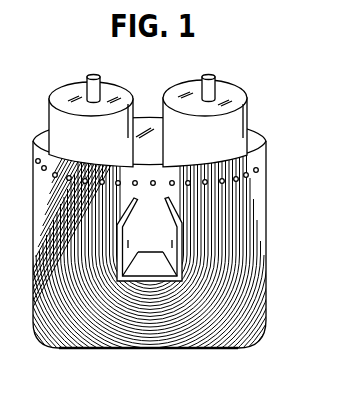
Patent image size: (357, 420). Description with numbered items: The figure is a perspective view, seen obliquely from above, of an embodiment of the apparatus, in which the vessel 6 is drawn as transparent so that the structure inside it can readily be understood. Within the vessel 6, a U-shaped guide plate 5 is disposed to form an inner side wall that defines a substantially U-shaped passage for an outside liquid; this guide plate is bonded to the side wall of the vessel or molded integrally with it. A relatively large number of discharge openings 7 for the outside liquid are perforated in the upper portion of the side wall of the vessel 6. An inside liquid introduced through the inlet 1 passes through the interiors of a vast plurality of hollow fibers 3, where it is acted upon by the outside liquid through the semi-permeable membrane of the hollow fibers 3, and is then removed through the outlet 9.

The inlet 1 is at (100, 78).
The outlet 9 is at (214, 78).
The vessel 6 is at (261, 151).
The discharge openings 7 is at (261, 169).
The hollow fibers 3 is at (249, 272).
The U-shaped guide plate 5 is at (142, 274).